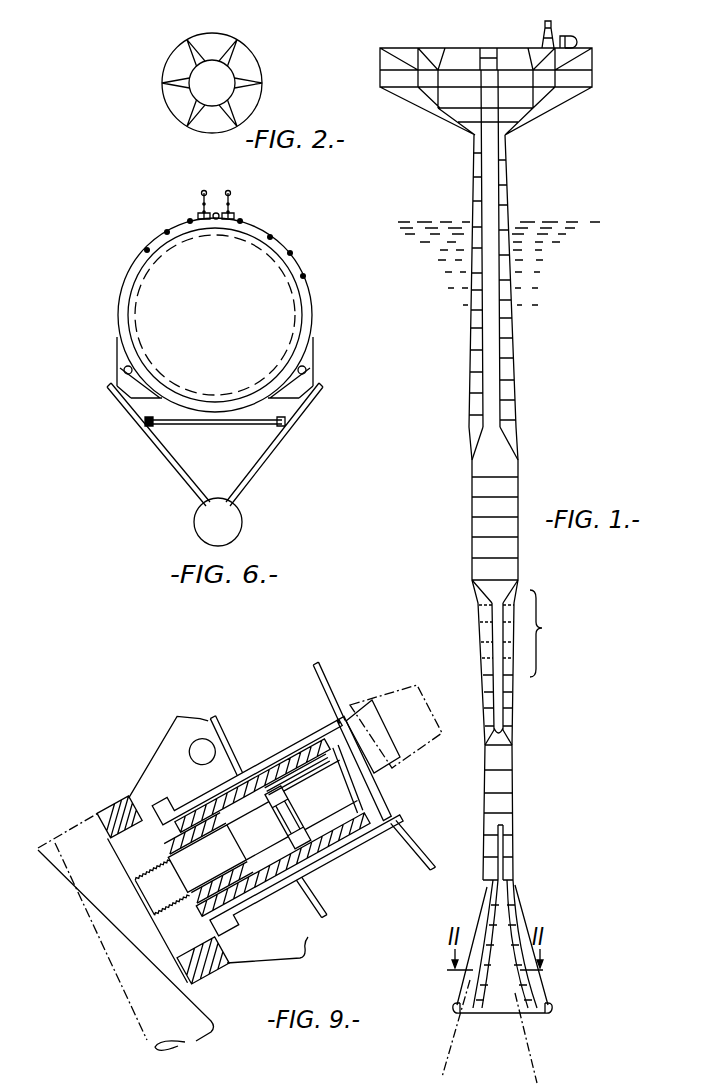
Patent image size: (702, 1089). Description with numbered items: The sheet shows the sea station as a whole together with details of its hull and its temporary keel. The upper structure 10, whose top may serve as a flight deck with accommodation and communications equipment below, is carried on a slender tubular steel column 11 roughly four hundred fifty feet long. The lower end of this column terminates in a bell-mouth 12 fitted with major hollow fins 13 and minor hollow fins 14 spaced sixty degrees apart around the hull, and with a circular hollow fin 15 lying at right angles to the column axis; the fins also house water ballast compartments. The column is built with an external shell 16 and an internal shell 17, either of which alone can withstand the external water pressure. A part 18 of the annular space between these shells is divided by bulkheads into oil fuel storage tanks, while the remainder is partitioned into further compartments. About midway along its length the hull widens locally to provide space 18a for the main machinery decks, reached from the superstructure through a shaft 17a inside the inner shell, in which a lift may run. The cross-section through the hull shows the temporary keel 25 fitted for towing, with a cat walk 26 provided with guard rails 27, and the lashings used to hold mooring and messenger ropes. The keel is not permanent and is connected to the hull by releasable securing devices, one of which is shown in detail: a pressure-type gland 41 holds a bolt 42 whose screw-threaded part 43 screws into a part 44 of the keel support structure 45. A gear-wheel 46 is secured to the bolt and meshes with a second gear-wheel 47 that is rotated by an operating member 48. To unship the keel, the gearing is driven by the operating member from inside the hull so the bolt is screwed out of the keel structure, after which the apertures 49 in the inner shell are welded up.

In FIG. 1, the upper structure 10 is at (595, 63).
In FIG. 1, the tubular steel column 11 is at (507, 200).
In FIG. 6, the tubular steel column 11 is at (118, 327).
In FIG. 1, the bell-mouth 12 is at (503, 1003).
In FIG. 2, the bell-mouth 12 is at (209, 72).
In FIG. 1, the major hollow fins 13 is at (482, 927).
In FIG. 2, the major hollow fins 13 is at (234, 53).
In FIG. 1, the minor hollow fins 14 is at (539, 1002).
In FIG. 2, the minor hollow fins 14 is at (241, 79).
In FIG. 1, the circular hollow fin 15 is at (539, 1018).
In FIG. 1, the external shell 16 is at (470, 352).
In FIG. 1, the internal shell 17 is at (508, 322).
In FIG. 1, the shaft 17a is at (490, 278).
In FIG. 1, the part of annular space 18 is at (542, 628).
In FIG. 1, the space for main machinery decks 18a is at (497, 500).
In FIG. 6, the keel 25 is at (250, 522).
In FIG. 6, the cat walk 26 is at (231, 203).
In FIG. 6, the guard rails 27 is at (201, 193).
In FIG. 9, the pressure-type gland 41 is at (249, 786).
In FIG. 9, the bolt 42 is at (208, 859).
In FIG. 9, the screw-threaded part 43 is at (160, 893).
In FIG. 9, the part of keel support structure 44 is at (205, 972).
In FIG. 9, the keel support structure 45 is at (142, 1014).
In FIG. 9, the gear-wheel 46 is at (308, 842).
In FIG. 9, the gear-wheel 47 is at (293, 778).
In FIG. 9, the operating member 48 is at (394, 715).
In FIG. 9, the apertures 49 is at (375, 792).